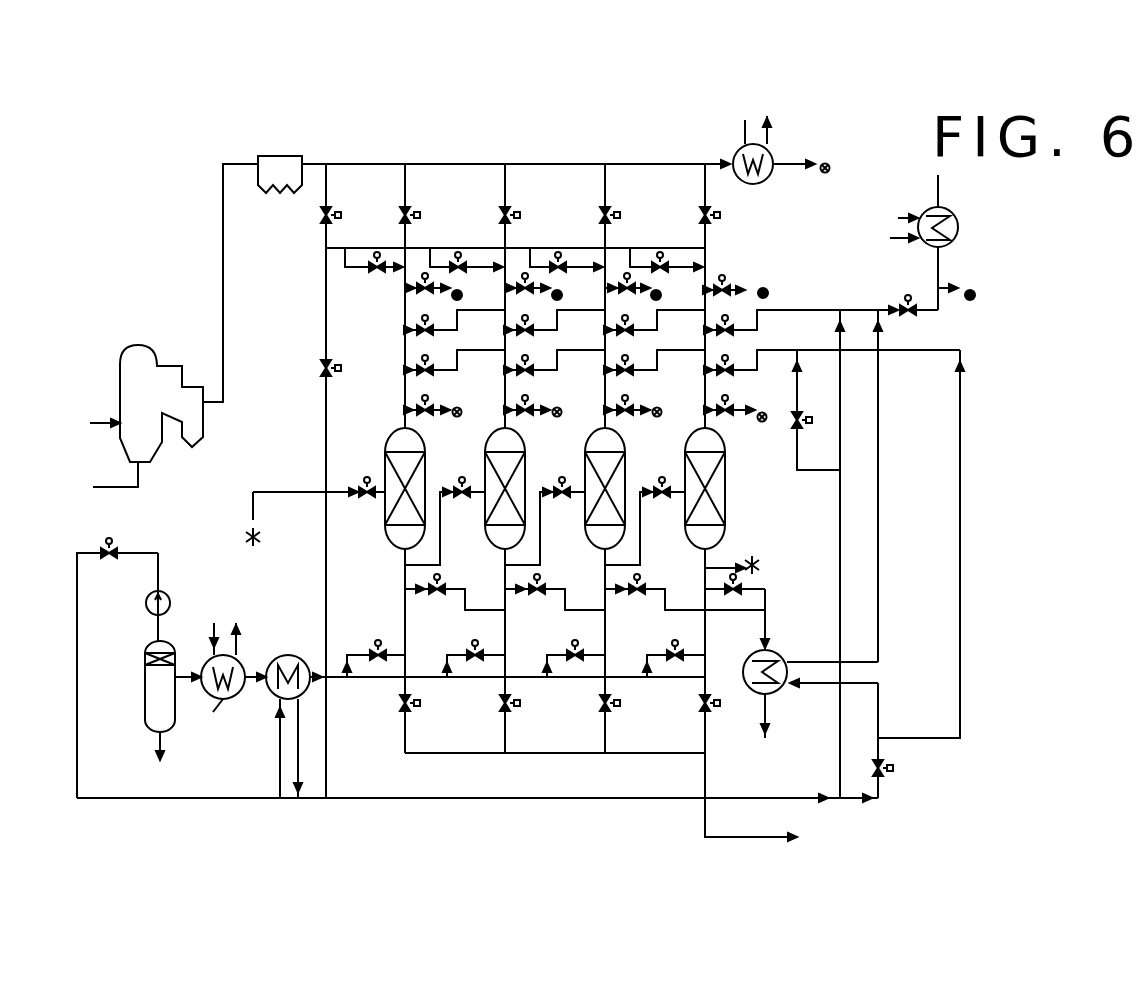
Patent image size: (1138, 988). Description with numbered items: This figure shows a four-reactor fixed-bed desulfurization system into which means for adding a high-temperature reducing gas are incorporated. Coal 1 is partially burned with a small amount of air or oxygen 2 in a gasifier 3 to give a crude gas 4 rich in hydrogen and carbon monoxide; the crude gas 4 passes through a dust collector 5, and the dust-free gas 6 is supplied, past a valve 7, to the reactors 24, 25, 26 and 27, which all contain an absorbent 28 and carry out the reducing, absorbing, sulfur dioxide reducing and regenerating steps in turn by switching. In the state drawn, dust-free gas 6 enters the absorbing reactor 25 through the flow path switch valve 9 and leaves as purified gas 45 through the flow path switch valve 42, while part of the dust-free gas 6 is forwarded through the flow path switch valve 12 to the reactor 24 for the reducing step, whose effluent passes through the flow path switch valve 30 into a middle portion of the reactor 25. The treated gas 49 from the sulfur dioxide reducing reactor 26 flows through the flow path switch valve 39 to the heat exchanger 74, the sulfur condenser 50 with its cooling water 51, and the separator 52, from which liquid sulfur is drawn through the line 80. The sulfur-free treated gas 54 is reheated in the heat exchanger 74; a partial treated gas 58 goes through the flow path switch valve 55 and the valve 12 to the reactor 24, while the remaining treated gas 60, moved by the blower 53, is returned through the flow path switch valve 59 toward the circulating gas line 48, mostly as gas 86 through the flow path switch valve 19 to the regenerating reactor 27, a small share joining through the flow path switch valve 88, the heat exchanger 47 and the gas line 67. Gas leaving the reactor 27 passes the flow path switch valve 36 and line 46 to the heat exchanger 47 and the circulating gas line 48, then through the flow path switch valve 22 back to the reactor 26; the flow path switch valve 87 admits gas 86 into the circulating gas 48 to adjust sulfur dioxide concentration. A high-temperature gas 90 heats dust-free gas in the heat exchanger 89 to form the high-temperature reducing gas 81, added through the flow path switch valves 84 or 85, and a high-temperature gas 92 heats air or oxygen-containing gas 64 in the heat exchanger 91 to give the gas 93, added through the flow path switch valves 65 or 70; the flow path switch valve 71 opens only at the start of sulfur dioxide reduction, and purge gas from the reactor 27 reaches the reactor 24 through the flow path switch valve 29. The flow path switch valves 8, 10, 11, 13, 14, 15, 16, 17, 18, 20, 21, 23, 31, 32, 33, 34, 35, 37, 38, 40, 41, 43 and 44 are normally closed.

The coal 1 is at (95, 421).
The air or oxygen 2 is at (110, 487).
The gasifier 3 is at (146, 350).
The crude gas 4 is at (225, 286).
The dust collector 5 is at (280, 156).
The dust-free gas 6 is at (318, 164).
The valve 7 is at (341, 215).
The flow path switch valve 8 is at (420, 215).
The flow path switch valve 9 is at (520, 215).
The flow path switch valve 10 is at (620, 215).
The flow path switch valve 11 is at (730, 208).
The flow path switch valve 12 is at (377, 255).
The flow path switch valve 13 is at (458, 255).
The flow path switch valve 14 is at (558, 255).
The flow path switch valve 15 is at (660, 255).
The flow path switch valve 16 is at (428, 318).
The flow path switch valve 17 is at (528, 318).
The flow path switch valve 18 is at (628, 318).
The flow path switch valve 19 is at (728, 318).
The flow path switch valve 20 is at (428, 358).
The flow path switch valve 21 is at (528, 358).
The flow path switch valve 22 is at (628, 358).
The flow path switch valve 23 is at (728, 358).
The reactor 24 is at (412, 440).
The reactor 25 is at (512, 440).
The reactor 26 is at (612, 440).
The reactor 27 is at (712, 438).
The absorbent 28 is at (741, 490).
The flow path switch valve 29 is at (367, 480).
The flow path switch valve 30 is at (462, 480).
The flow path switch valve 31 is at (562, 480).
The flow path switch valve 32 is at (662, 480).
The flow path switch valve 33 is at (440, 577).
The flow path switch valve 34 is at (540, 577).
The flow path switch valve 35 is at (640, 577).
The flow path switch valve 36 is at (736, 577).
The flow path switch valve 37 is at (378, 643).
The flow path switch valve 38 is at (475, 643).
The flow path switch valve 39 is at (575, 643).
The flow path switch valve 40 is at (675, 643).
The flow path switch valve 41 is at (420, 703).
The flow path switch valve 42 is at (520, 703).
The flow path switch valve 43 is at (620, 703).
The flow path switch valve 44 is at (720, 703).
The purified gas 45 is at (752, 837).
The line to cooler 46 is at (766, 636).
The heat exchanger 47 is at (779, 689).
The circulating gas line 48 is at (959, 526).
The treated gas 49 is at (367, 680).
The sulfur condenser 50 is at (217, 703).
The cooling water 51 is at (213, 630).
The separator 52 is at (145, 692).
The blower 53 is at (146, 608).
The treated gas 54 is at (145, 553).
The flow path switch valve 55 is at (341, 368).
The partial treated gas 58 is at (325, 318).
The flow path switch valve 59 is at (109, 541).
The remaining treated gas 60 is at (470, 798).
The air or oxygen-containing gas 64 is at (945, 178).
The flow path switch valve 65 is at (908, 298).
The gas line 67 is at (880, 478).
The flow path switch valve 70 is at (626, 275).
The flow path switch valve 71 is at (722, 278).
The heat exchanger 74 is at (271, 699).
The line 80 is at (157, 752).
The high-temperature reducing gas 81 is at (815, 140).
The flow path switch valve 84 is at (638, 388).
The flow path switch valve 85 is at (738, 388).
The gas line 86 is at (840, 549).
The flow path switch valve 87 is at (812, 420).
The flow path switch valve 88 is at (893, 768).
The heat exchanger 89 is at (767, 180).
The high-temperature gas 90 is at (745, 128).
The heat exchanger 91 is at (956, 219).
The high-temperature gas 92 is at (902, 218).
The air or oxygen-containing gas 93 is at (963, 262).